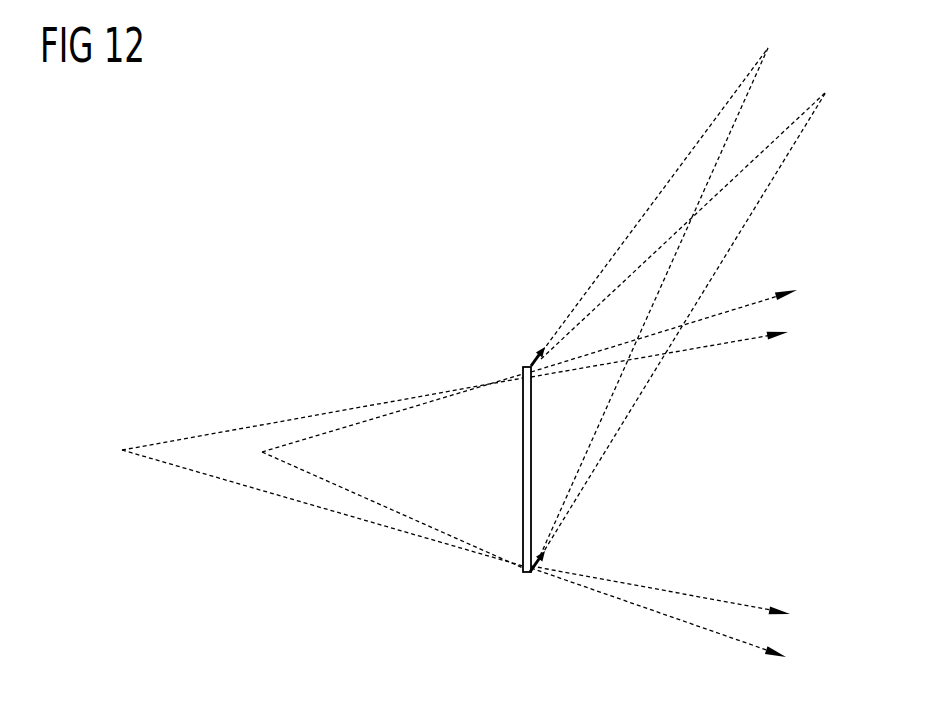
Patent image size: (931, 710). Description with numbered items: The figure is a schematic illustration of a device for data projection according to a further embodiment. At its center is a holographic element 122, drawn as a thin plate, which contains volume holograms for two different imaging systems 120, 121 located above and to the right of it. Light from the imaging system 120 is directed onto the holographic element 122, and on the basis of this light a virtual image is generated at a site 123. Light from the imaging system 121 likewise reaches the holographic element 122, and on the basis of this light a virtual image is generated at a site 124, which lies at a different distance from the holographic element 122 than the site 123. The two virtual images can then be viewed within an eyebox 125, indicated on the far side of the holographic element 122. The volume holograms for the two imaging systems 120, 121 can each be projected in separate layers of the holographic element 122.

The imaging system 120 is at (766, 48).
The imaging system 121 is at (826, 92).
The holographic element 122 is at (522, 462).
The site 123 is at (261, 451).
The site 124 is at (121, 450).
The eyebox 125 is at (690, 459).